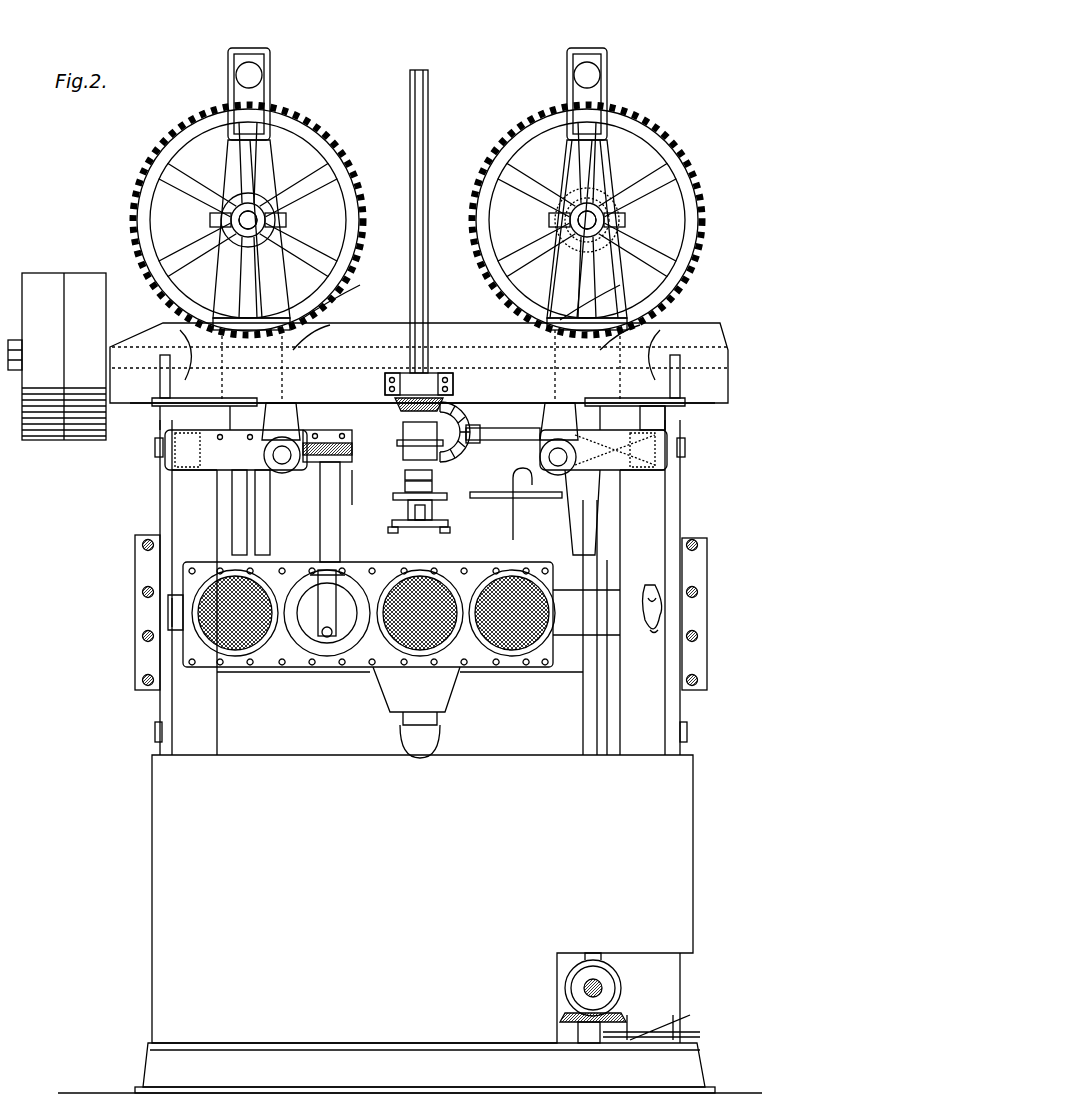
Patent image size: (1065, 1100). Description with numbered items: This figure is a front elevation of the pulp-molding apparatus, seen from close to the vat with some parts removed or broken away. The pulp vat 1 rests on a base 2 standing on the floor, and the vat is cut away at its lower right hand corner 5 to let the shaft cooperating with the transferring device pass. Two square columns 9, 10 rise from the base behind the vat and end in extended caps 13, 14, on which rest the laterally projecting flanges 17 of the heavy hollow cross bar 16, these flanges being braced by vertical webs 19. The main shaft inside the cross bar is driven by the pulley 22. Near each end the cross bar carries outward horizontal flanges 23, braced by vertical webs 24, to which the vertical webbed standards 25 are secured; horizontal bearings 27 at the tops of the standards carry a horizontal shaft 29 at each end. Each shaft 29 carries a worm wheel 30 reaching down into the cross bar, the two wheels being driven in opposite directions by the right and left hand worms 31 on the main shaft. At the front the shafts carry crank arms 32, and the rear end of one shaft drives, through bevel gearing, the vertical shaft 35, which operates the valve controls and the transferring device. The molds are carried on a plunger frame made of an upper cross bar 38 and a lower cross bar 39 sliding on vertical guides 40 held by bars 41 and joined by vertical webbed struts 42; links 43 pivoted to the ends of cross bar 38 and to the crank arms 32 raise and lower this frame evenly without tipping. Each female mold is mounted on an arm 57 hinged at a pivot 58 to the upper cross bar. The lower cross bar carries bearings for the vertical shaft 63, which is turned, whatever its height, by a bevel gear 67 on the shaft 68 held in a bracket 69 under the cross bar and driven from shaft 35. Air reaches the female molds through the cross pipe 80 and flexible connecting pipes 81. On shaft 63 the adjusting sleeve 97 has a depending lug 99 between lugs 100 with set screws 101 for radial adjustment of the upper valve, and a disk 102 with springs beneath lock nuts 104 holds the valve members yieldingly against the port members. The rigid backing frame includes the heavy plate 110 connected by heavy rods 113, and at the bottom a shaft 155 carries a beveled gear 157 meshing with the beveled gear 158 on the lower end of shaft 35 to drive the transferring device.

The pulp vat 1 is at (152, 893).
The base 2 is at (703, 1058).
The lower right hand corner 5 is at (683, 962).
The square column 9 is at (203, 530).
The square column 10 is at (650, 497).
The extended cap 13 is at (285, 425).
The extended cap 14 is at (680, 410).
The cross bar 16 is at (452, 328).
The laterally projecting flanges 17 is at (185, 405).
The vertical webs 19 is at (180, 370).
The pulley 22 is at (50, 272).
The horizontal flanges 23 is at (300, 340).
The vertical webs 24 is at (265, 355).
The vertical webbed standards 25 is at (605, 262).
The horizontal bearings 27 is at (615, 200).
The horizontal shaft 29 is at (238, 210).
The worm wheels 30 is at (340, 150).
The right and left hand worms 31 is at (293, 350).
The crank arms 32 is at (235, 155).
The vertical shaft 35 is at (584, 710).
The cross bar 38 is at (203, 462).
The cross bar 39 is at (205, 662).
The vertical guides 40 is at (172, 498).
The bars 41 is at (154, 445).
The vertical webbed struts 42 is at (271, 526).
The links 43 is at (265, 155).
The arm 57 is at (333, 538).
The pivot 58 is at (318, 430).
The vertical shaft 63 is at (427, 185).
The beveled gear 67 is at (455, 450).
The shaft 68 is at (520, 440).
The bracket 69 is at (466, 410).
The cross pipe 80 is at (487, 494).
The flexible connecting pipes 81 is at (348, 482).
The adjusting sleeve 97 is at (403, 507).
The depending lug 99 is at (436, 512).
The lugs 100 is at (418, 527).
The set screws 101 is at (393, 534).
The disk or washer 102 is at (438, 498).
The lock nuts 104 is at (404, 486).
The heavy plate 110 is at (140, 535).
The heavy rods 113 is at (143, 636).
The shaft 155 is at (584, 988).
The beveled gear 157 is at (607, 962).
The beveled gear 158 is at (578, 1025).